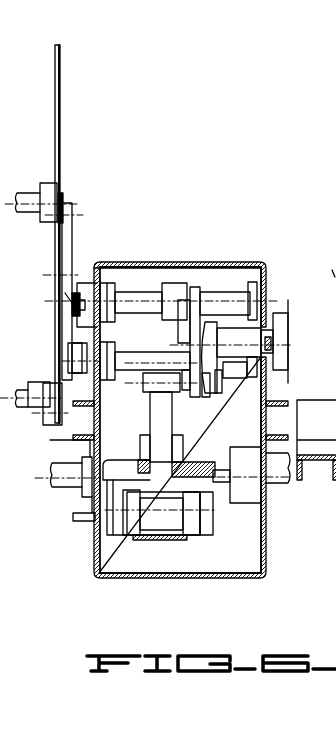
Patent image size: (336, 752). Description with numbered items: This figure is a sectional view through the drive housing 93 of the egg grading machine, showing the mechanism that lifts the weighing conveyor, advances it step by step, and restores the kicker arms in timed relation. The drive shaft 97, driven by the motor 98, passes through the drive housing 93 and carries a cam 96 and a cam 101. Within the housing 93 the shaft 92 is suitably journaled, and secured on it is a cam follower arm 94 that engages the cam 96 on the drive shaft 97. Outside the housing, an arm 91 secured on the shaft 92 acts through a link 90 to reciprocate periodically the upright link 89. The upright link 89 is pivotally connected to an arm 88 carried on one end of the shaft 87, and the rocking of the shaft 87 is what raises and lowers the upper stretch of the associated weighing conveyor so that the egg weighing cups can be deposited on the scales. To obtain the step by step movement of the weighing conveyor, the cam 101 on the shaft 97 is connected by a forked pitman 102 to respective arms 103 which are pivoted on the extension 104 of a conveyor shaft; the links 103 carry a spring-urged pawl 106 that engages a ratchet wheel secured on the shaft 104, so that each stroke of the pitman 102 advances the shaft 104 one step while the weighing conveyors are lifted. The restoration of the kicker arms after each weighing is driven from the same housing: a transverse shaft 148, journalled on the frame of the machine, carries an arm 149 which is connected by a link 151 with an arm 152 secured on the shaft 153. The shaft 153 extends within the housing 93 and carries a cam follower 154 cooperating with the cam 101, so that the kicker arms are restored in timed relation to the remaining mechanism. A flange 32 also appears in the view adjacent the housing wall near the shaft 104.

The flange 32 is at (74, 521).
The shaft 87 is at (22, 398).
The arm 88 is at (45, 423).
The upright link 89 is at (60, 88).
The link 90 is at (71, 313).
The arm 91 is at (80, 348).
The shaft 92 is at (131, 352).
The drive housing 93 is at (201, 274).
The cam follower arm 94 is at (219, 393).
The cam 96 is at (206, 397).
The drive shaft 97 is at (273, 340).
The motor 98 is at (288, 300).
The cam 101 is at (203, 288).
The forked pitman 102 is at (150, 413).
The arms 103 is at (190, 530).
The extension of shaft 104 is at (61, 483).
The spring-urged pawl 106 is at (165, 520).
The transverse shaft 148 is at (23, 212).
The arm 149 is at (43, 183).
The link 151 is at (70, 230).
The arm 152 is at (86, 283).
The shaft 153 is at (125, 292).
The cam follower 154 is at (170, 283).